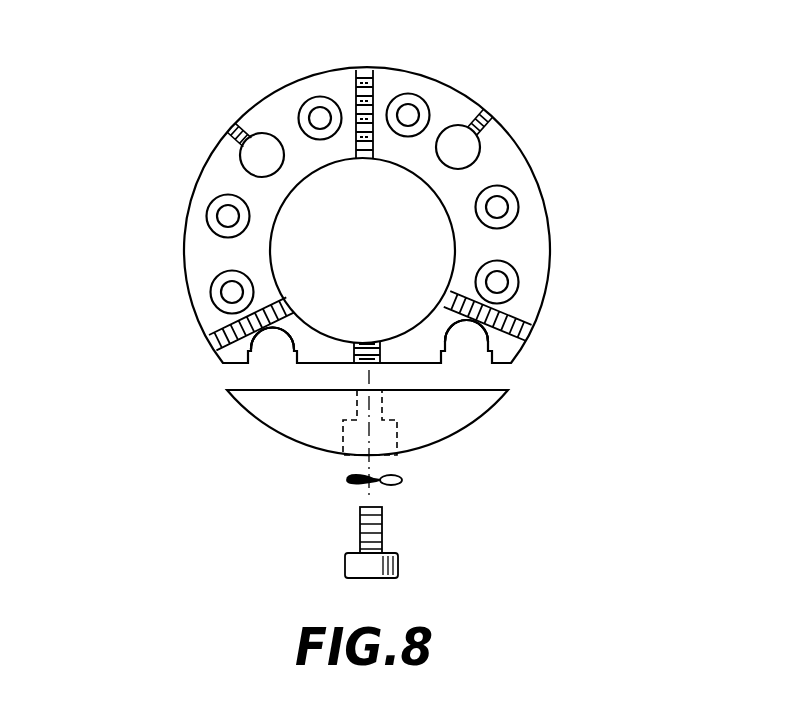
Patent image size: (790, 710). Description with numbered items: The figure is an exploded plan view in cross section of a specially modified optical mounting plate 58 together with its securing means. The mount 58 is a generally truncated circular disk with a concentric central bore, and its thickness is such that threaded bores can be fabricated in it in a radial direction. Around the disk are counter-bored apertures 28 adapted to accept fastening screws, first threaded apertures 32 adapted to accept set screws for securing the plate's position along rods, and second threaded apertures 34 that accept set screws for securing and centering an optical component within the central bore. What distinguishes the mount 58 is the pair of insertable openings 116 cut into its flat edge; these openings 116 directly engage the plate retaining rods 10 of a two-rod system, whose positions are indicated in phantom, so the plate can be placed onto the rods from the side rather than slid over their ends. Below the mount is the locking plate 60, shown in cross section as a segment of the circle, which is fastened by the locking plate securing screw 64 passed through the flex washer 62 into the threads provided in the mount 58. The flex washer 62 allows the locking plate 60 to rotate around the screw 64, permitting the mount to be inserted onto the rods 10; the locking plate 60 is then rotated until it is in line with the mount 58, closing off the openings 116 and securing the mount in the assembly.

The plate retaining rod 10 is at (290, 343).
The counter-bored aperture 28 is at (320, 118).
The first threaded aperture 32 is at (224, 136).
The second threaded aperture 34 is at (370, 60).
The optical mounting plate 58 is at (530, 243).
The locking plate 60 is at (328, 437).
The flex washer 62 is at (402, 480).
The locking plate securing screw 64 is at (399, 563).
The insertable opening 116 is at (286, 338).